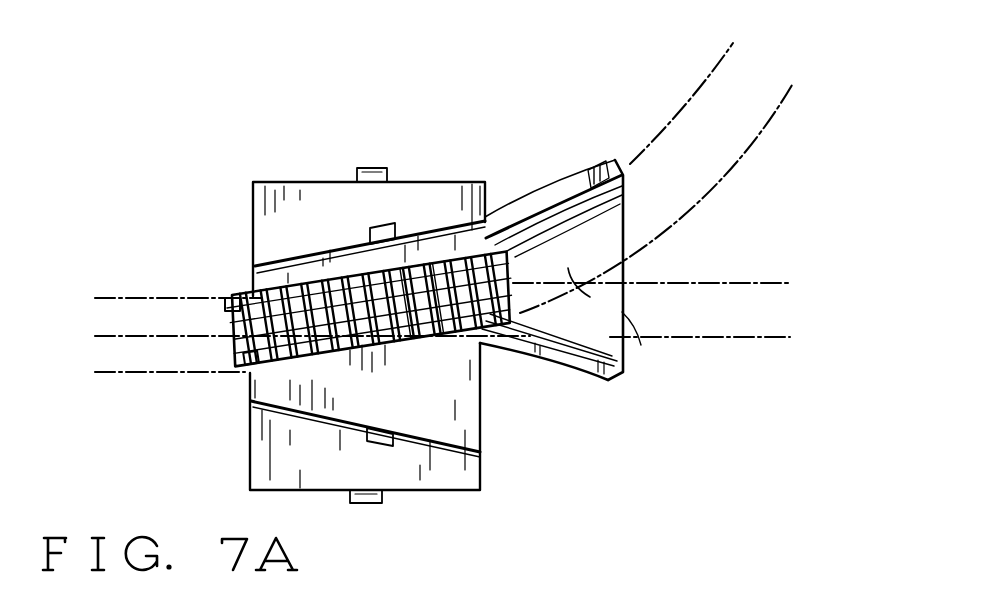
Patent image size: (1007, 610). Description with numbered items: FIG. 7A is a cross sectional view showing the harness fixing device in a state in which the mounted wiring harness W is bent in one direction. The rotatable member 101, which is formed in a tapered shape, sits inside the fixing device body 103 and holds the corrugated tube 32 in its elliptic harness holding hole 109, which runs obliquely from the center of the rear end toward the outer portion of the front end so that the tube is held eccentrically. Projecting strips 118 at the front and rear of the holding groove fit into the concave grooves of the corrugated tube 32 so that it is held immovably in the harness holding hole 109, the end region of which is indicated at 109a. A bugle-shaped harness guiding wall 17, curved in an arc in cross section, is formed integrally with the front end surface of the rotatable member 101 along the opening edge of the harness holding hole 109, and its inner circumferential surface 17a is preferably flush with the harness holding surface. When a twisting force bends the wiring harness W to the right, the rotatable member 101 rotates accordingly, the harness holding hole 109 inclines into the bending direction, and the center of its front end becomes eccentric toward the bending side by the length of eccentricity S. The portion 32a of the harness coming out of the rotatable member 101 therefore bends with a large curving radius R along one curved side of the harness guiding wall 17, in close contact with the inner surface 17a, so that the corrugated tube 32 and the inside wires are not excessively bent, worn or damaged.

The fixing device body 103 is at (290, 184).
The rotatable member 101 is at (347, 260).
The harness holding hole 109 is at (425, 255).
The chain link end portion 109a is at (238, 297).
The corrugated tube 32 is at (231, 296).
The portion of a harness 32a is at (590, 297).
The projecting strip 118 is at (288, 364).
The harness guiding wall 17 is at (603, 168).
The inner circumferential surface 17a is at (586, 190).
The curving radius R is at (561, 213).
The wiring harness W is at (698, 207).
The length of eccentricity S is at (793, 284).